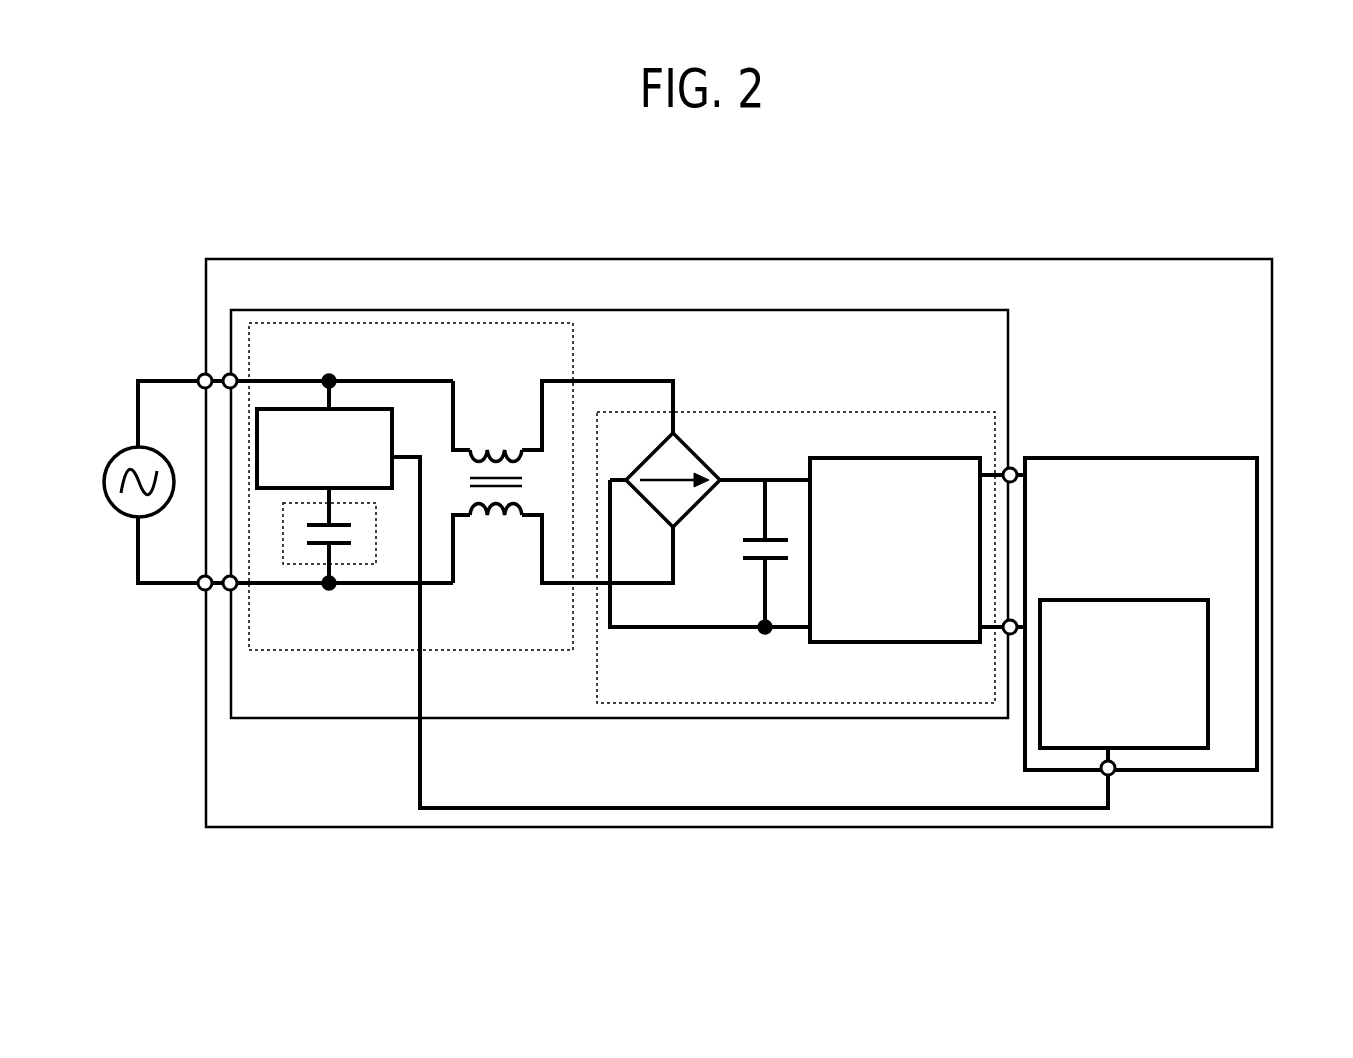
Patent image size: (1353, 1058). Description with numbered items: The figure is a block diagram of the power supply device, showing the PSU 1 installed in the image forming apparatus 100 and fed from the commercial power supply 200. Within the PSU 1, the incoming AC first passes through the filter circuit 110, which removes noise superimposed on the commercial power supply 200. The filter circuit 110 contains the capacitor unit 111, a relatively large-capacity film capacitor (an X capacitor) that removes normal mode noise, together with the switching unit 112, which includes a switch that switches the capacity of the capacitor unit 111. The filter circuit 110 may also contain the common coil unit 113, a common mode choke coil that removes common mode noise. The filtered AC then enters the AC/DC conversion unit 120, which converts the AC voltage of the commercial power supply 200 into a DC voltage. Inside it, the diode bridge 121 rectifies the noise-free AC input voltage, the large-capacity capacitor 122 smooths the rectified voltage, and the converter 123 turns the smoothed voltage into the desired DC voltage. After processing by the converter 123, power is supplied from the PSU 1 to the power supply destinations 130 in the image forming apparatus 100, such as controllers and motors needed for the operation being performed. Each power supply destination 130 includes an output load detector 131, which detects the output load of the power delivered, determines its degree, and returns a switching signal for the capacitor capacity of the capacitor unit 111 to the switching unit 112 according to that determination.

The image forming apparatus 100 is at (1195, 259).
The PSU 1 is at (988, 310).
The commercial power supply 200 is at (112, 510).
The filter circuit 110 is at (511, 323).
The capacitor unit 111 is at (298, 565).
The switching unit 112 is at (347, 409).
The common coil unit 113 is at (500, 522).
The AC/DC conversion unit 120 is at (922, 412).
The diode bridge 121 is at (693, 457).
The capacitor 122 is at (748, 563).
The converter 123 is at (903, 645).
The power supply destinations 130 is at (1258, 490).
The output load detector 131 is at (1208, 628).